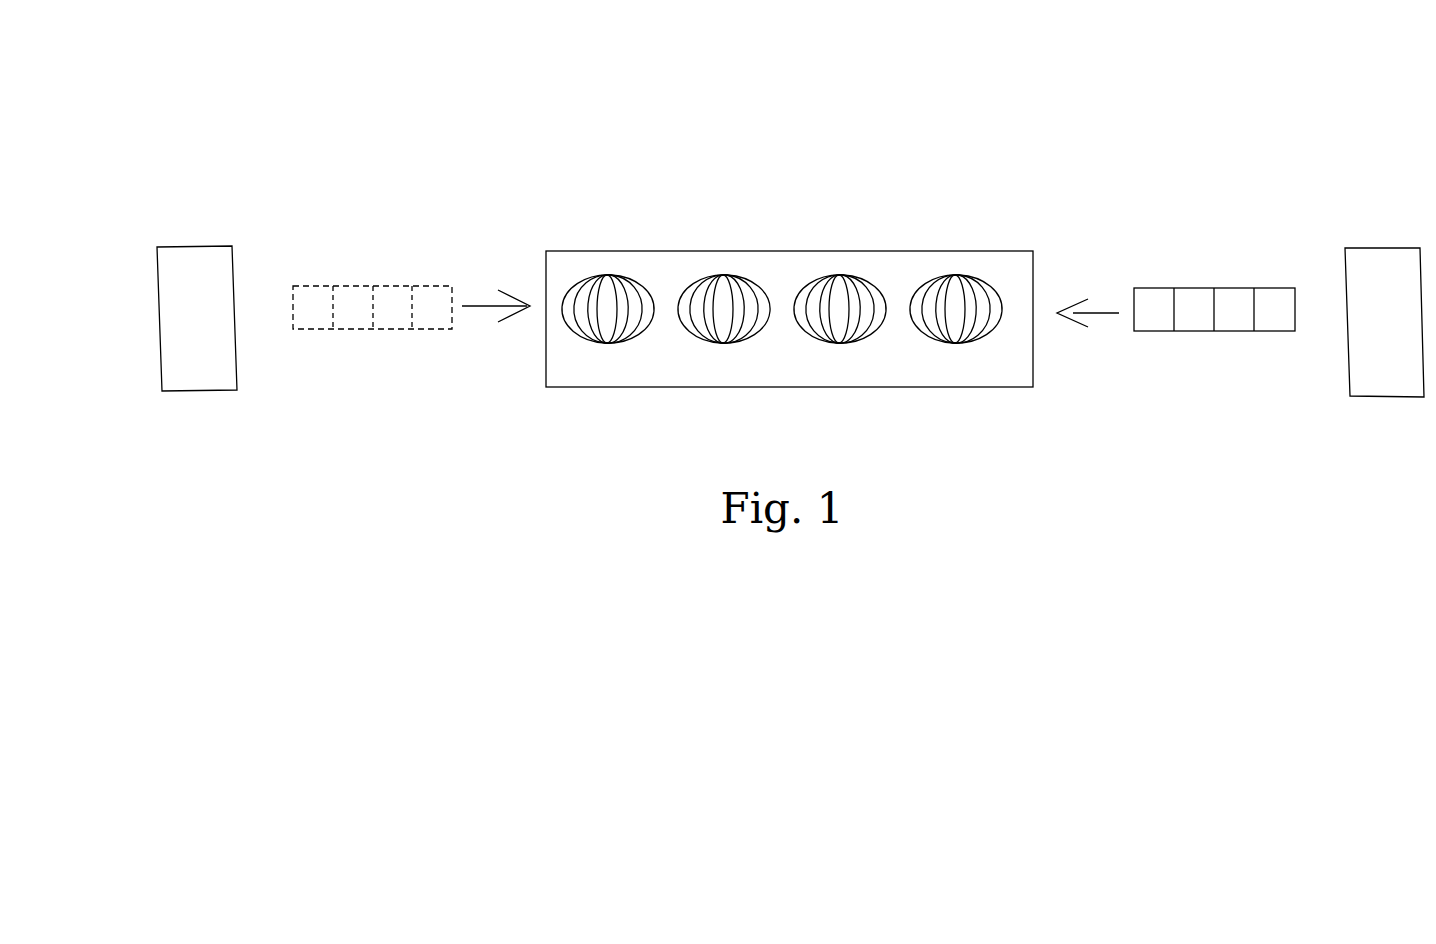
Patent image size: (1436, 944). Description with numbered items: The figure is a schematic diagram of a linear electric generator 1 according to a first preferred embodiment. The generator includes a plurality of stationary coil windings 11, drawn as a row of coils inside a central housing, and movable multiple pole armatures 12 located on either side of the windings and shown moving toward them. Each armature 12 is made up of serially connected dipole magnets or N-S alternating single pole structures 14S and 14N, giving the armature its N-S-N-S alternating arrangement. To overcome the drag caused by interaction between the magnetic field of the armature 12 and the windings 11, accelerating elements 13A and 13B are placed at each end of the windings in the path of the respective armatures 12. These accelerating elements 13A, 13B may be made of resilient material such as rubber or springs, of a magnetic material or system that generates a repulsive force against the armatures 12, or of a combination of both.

The linear electric generator 1 is at (877, 47).
The stationary coil windings 11 is at (900, 251).
The multiple pole armature 12 is at (352, 287).
The accelerating element 13A is at (1380, 248).
The accelerating element 13B is at (192, 247).
The S single pole structure 14S is at (306, 330).
The N single pole structure 14N is at (357, 330).